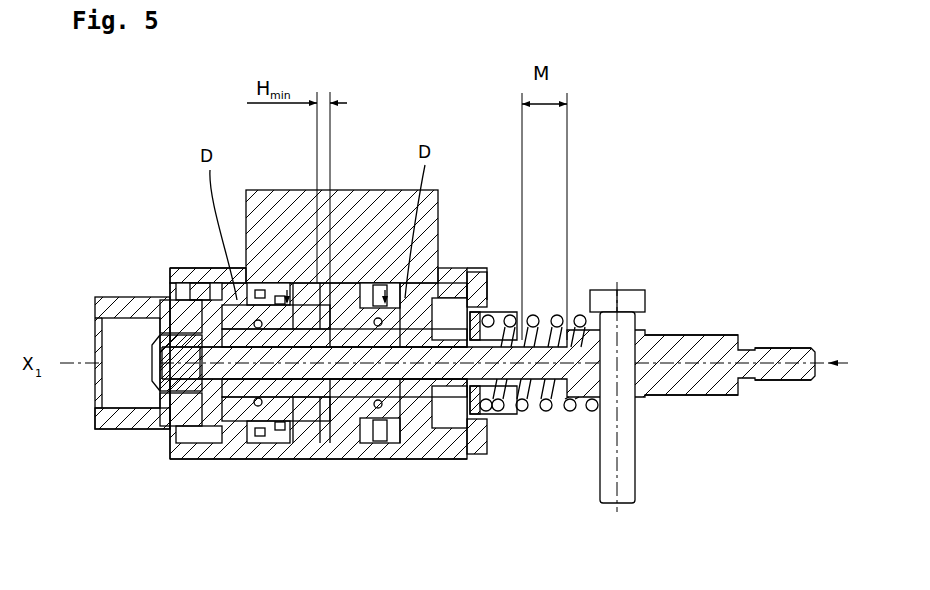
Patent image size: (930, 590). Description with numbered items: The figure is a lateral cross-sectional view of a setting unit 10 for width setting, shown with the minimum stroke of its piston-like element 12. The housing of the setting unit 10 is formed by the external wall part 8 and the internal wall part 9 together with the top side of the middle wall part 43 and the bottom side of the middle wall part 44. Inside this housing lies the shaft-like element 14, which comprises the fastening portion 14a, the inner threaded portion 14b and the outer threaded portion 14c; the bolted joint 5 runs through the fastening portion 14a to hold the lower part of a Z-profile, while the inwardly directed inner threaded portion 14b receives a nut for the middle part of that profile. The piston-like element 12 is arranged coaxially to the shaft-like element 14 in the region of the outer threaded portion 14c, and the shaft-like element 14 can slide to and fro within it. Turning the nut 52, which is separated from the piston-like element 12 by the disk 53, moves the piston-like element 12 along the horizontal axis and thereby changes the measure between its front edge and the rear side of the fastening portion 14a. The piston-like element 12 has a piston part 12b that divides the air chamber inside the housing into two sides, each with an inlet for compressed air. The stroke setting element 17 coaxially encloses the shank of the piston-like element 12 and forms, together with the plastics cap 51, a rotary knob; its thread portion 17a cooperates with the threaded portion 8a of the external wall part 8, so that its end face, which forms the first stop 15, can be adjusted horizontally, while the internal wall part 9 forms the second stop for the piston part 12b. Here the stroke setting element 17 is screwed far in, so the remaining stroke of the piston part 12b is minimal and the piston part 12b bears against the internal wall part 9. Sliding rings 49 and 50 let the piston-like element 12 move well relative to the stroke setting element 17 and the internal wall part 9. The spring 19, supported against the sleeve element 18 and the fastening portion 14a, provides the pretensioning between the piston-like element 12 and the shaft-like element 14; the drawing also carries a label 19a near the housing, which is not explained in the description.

The bolted joint 5 is at (618, 503).
The external wall part 8 is at (222, 458).
The threaded portion 8a is at (184, 272).
The internal wall part 9 is at (452, 268).
The setting unit 10 is at (660, 141).
The piston-like element 12 is at (448, 400).
The piston part 12b is at (318, 440).
The shaft-like element 14 is at (699, 400).
The fastening portion 14a is at (700, 335).
The inner threaded portion 14b is at (780, 350).
The outer threaded portion 14c is at (100, 426).
The first stop 15 is at (305, 440).
The stroke setting element 17 is at (138, 426).
The thread portion 17a is at (205, 442).
The sleeve element 18 is at (490, 420).
The spring 19 is at (540, 412).
The spring end 19a is at (305, 300).
The middle wall part 43 is at (358, 200).
The middle wall part 44 is at (372, 452).
The sliding ring 49 is at (280, 450).
The sliding ring 50 is at (405, 445).
The plastics cap 51 is at (96, 386).
The nut 52 is at (97, 333).
The disk 53 is at (166, 422).